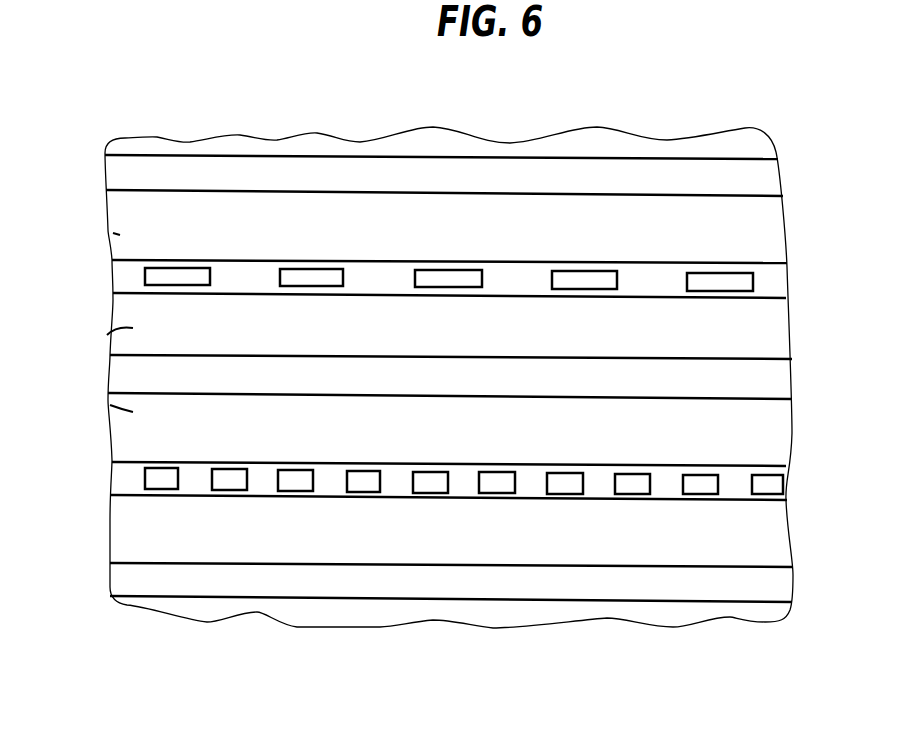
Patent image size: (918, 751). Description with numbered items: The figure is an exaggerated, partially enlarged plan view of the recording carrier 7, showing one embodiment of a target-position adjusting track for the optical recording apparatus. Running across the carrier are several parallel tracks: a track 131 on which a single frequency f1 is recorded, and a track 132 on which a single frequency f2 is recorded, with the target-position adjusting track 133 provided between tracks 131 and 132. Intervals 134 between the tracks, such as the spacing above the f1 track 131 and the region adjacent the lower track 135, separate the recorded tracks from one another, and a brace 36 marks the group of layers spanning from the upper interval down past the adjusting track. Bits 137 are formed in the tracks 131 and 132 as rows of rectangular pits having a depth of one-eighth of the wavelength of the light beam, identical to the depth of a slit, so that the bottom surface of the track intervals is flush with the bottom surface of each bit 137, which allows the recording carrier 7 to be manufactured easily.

The recording carrier 7 is at (660, 138).
The interval between tracks 134 is at (767, 177).
The track recorded with single frequency f1 131 is at (767, 280).
The target-position adjusting track 133 is at (765, 382).
The track recorded with single frequency f2 132 is at (767, 472).
The lower layer 135 is at (767, 587).
The bit 137 is at (448, 277).
The layered structure 36 is at (110, 233).